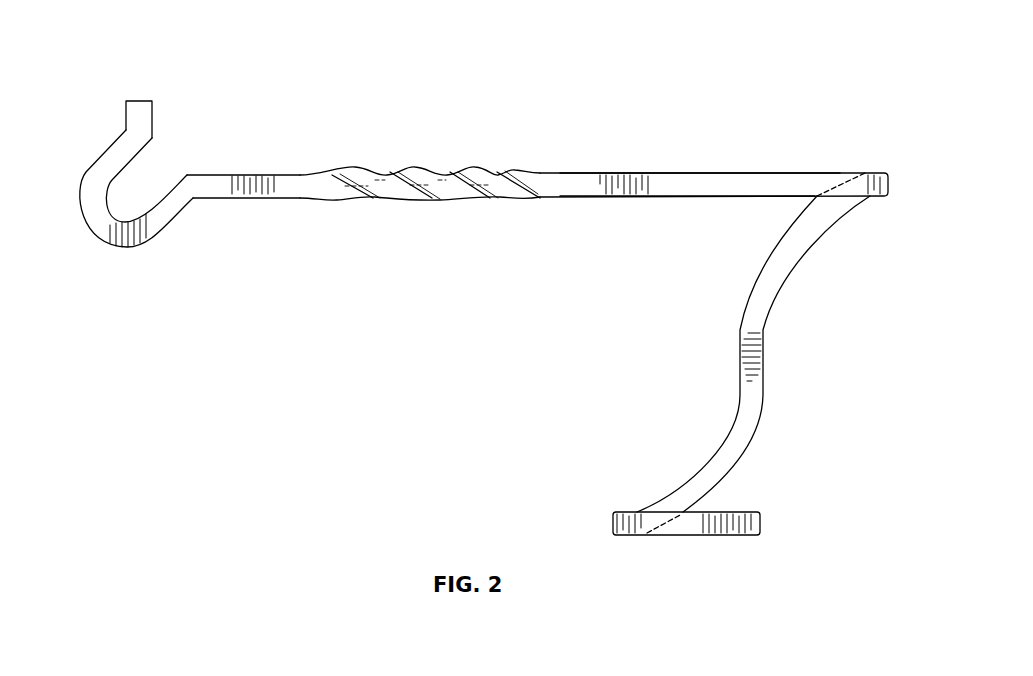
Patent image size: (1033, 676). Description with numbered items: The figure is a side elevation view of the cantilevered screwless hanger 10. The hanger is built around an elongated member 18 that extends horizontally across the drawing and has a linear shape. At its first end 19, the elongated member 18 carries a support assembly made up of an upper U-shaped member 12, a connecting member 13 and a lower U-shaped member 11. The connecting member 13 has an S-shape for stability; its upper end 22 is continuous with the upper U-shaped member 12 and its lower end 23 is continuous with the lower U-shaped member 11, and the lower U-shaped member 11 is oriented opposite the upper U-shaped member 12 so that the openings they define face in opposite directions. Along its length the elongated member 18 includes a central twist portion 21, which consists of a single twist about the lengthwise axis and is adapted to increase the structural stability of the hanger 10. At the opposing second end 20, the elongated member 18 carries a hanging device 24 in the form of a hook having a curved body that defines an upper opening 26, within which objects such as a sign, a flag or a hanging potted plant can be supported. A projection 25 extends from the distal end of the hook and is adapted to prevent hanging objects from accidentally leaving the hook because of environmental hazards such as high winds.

The cantilevered screwless hanger 10 is at (782, 95).
The lower U-shaped member 11 is at (730, 525).
The upper U-shaped member 12 is at (890, 177).
The connecting member 13 is at (755, 357).
The elongated member 18 is at (698, 185).
The first end 19 is at (828, 178).
The second end 20 is at (210, 185).
The central twist portion 21 is at (447, 190).
The upper end 22 is at (818, 213).
The lower end 23 is at (670, 507).
The hanging device 24 is at (108, 227).
The projection 25 is at (140, 110).
The upper opening 26 is at (157, 167).